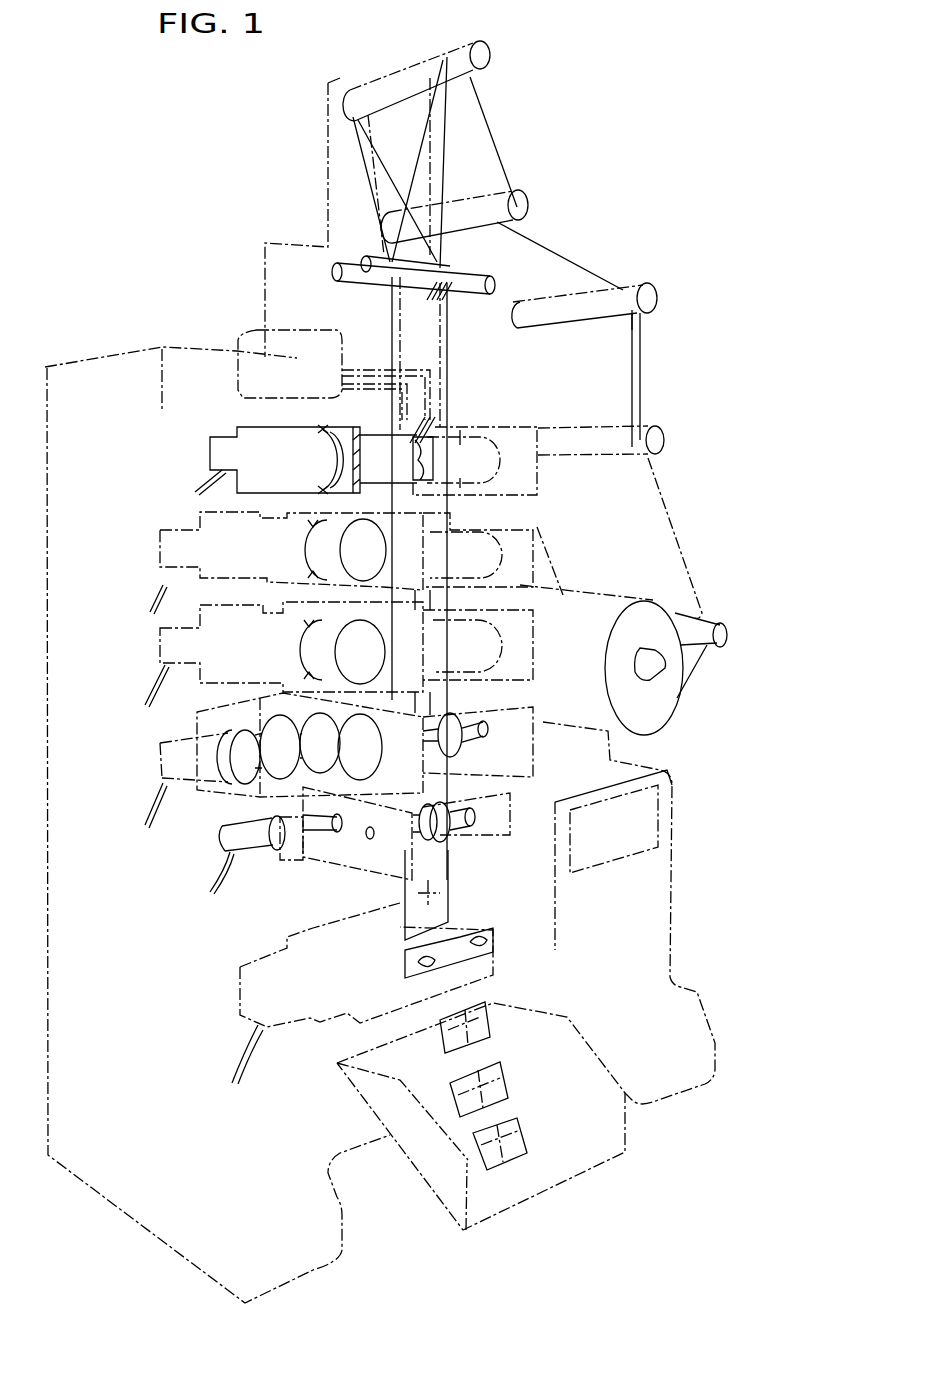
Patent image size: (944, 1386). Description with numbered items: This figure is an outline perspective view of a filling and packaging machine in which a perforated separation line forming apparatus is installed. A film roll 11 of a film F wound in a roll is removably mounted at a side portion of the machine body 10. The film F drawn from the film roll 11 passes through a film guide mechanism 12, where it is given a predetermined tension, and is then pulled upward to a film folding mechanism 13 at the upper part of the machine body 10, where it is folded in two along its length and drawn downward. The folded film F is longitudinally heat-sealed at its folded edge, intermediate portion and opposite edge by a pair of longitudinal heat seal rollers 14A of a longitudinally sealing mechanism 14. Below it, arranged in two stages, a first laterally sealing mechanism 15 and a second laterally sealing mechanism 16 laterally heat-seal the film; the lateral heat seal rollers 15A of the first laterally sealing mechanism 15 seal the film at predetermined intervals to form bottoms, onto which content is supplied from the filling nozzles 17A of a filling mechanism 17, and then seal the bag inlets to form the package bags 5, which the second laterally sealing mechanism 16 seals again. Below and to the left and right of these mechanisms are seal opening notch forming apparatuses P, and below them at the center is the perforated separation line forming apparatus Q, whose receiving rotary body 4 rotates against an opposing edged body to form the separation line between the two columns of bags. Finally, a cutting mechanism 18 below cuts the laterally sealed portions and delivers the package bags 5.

The machine body 10 is at (193, 310).
The film roll 11 is at (672, 698).
The film guide mechanism 12 is at (682, 388).
The film folding mechanism 13 is at (468, 155).
The longitudinally sealing mechanism 14 is at (515, 427).
The longitudinal heat seal rollers 14A is at (465, 440).
The first laterally sealing mechanism 15 is at (530, 543).
The lateral heat seal rollers 15A is at (490, 535).
The second laterally sealing mechanism 16 is at (517, 646).
The filling mechanism 17 is at (283, 322).
The filling nozzles 17A is at (389, 393).
The cutting mechanism 18 is at (363, 947).
The receiving rotary body 4 is at (457, 800).
The package bags 5 is at (455, 862).
The film F is at (437, 328).
The seal opening notch forming apparatuses P is at (505, 742).
The perforated separation line forming apparatus Q is at (483, 840).